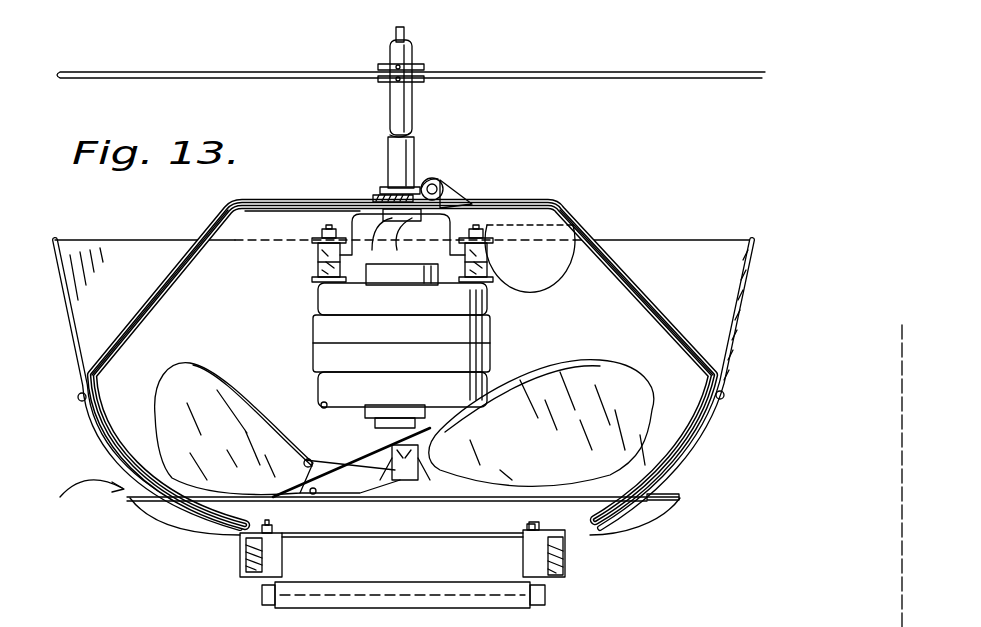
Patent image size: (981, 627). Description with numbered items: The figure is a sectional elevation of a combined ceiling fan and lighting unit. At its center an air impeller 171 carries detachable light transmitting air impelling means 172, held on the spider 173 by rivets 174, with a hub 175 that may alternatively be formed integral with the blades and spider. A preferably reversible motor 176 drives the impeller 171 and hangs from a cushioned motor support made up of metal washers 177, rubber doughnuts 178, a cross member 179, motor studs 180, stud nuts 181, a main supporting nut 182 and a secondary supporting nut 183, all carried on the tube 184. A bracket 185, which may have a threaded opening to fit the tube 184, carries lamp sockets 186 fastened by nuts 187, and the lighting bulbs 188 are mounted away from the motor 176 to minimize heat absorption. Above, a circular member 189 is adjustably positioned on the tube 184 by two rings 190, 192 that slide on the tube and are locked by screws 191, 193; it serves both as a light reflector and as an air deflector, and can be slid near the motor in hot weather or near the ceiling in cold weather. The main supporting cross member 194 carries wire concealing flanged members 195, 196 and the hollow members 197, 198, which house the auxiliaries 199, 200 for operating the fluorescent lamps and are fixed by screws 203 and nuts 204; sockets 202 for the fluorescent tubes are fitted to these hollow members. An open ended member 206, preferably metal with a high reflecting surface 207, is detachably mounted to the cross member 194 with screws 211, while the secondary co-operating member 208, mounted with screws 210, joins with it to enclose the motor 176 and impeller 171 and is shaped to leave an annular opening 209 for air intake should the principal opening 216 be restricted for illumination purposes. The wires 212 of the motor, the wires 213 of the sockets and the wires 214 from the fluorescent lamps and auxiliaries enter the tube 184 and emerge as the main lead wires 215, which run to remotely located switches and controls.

The air impeller 171 is at (408, 482).
The air impelling means 172 is at (153, 396).
The spider 173 is at (350, 482).
The rivets 174 is at (300, 470).
The hub 175 is at (385, 445).
The motor 176 is at (401, 355).
The metal washers 177 is at (312, 241).
The rubber doughnuts 178 is at (318, 253).
The cross member 179 is at (318, 266).
The motor studs 180 is at (300, 208).
The stud nuts 181 is at (321, 234).
The main supporting nut 182 is at (386, 211).
The secondary supporting nut 183 is at (378, 190).
The tube 184 is at (392, 153).
The bracket 185 is at (442, 181).
The lamp sockets 186 is at (470, 198).
The nuts 187 is at (428, 180).
The lighting bulbs 188 is at (530, 258).
The member 189 is at (640, 78).
The ring 190 is at (422, 66).
The screw 191 is at (380, 66).
The ring 192 is at (424, 80).
The screw 193 is at (380, 80).
The main supporting cross member 194 is at (598, 218).
The wire concealing flanged member 195 is at (645, 298).
The wire concealing flanged member 196 is at (138, 342).
The hollow member 197 is at (565, 577).
The hollow member 198 is at (268, 576).
The auxiliary 199 is at (565, 562).
The auxiliary 200 is at (244, 560).
The sockets 202 is at (264, 600).
The screws 203 is at (530, 525).
The nuts 204 is at (523, 531).
The open ended member 206 is at (738, 342).
The high reflecting surface 207 is at (740, 270).
The secondary co-operating member 208 is at (150, 518).
The annular opening 209 is at (678, 496).
The screws 210 is at (240, 538).
The screws 211 is at (78, 398).
The wires 212 is at (462, 297).
The wires 213 is at (402, 237).
The wires 214 is at (387, 239).
The main lead wires 215 is at (406, 32).
The principal opening 216 is at (338, 537).